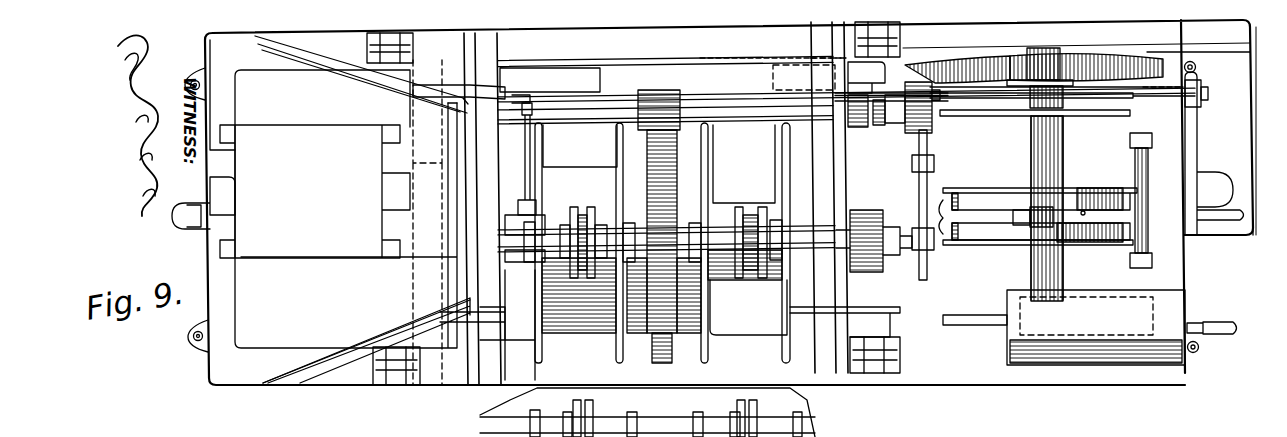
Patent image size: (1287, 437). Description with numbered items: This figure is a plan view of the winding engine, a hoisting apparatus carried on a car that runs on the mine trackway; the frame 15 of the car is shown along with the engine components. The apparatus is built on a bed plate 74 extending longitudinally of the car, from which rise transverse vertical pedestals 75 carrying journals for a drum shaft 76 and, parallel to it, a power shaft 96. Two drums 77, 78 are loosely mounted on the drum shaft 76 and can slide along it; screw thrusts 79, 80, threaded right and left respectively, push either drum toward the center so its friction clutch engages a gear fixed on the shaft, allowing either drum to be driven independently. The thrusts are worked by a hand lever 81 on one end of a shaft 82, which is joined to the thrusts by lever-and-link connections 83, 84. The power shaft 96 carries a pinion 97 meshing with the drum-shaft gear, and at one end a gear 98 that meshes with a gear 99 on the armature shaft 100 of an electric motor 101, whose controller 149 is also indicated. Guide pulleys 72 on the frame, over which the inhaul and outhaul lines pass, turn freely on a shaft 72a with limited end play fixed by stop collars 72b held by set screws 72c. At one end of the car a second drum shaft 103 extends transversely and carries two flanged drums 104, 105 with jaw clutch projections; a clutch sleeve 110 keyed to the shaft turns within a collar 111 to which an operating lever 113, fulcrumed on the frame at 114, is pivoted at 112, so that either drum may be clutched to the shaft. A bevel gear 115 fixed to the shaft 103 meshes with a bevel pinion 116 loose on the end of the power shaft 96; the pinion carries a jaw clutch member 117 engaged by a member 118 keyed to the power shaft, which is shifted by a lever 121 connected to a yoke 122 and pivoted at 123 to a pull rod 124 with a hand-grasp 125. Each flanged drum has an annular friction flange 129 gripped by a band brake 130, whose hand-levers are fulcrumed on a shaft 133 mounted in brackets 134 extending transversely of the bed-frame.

The frame 15 is at (1270, 211).
The guide pulleys 72 is at (580, 212).
The shaft 72a is at (566, 200).
The stop collars 72b is at (762, 284).
The set screws 72c is at (826, 404).
The bed plate 74 is at (460, 382).
The pedestals 75 is at (838, 186).
The drum shaft 76 is at (448, 252).
The drum 77 is at (583, 176).
The drum 78 is at (765, 198).
The screw thrust 79 is at (530, 214).
The screw thrust 80 is at (863, 214).
The hand lever 81 is at (1198, 162).
The shaft 82 is at (1207, 98).
The lever-and-link connection 83 is at (520, 188).
The lever-and-link connection 84 is at (922, 182).
The power shaft 96 is at (736, 118).
The pinion 97 is at (663, 92).
The gear 98 is at (483, 58).
The gear 99 is at (412, 222).
The armature shaft 100 is at (404, 196).
The electric motor 101 is at (310, 240).
The drum shaft 103 is at (1035, 43).
The flanged drum 104 is at (1063, 150).
The flanged drum 105 is at (1063, 288).
The clutch sleeve 110 is at (1000, 235).
The collar 111 is at (1028, 235).
The pivotal connection 112 is at (1040, 166).
The operating lever 113 is at (1122, 242).
The fulcrum 114 is at (1082, 198).
The bevel gear 115 is at (1117, 62).
The bevel pinion 116 is at (932, 128).
The jaw clutch member 117 is at (890, 128).
The jaw clutch member 118 is at (865, 128).
The lever 121 is at (843, 100).
The yoke 122 is at (888, 78).
The pivotal connection 123 is at (811, 74).
The pull rod 124 is at (1005, 66).
The hand-grasp 125 is at (1125, 97).
The annular friction flange 129 is at (966, 188).
The band brake 130 is at (1034, 220).
The shaft 133 is at (1140, 166).
The brackets 134 is at (1152, 140).
The motor controller 149 is at (1155, 367).